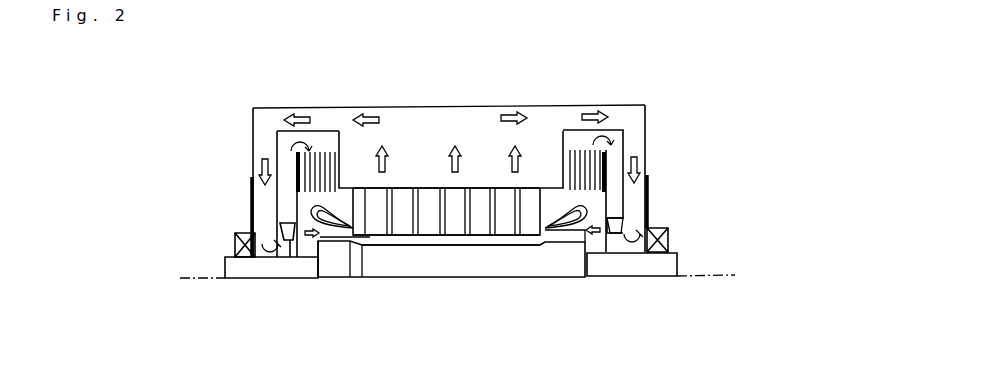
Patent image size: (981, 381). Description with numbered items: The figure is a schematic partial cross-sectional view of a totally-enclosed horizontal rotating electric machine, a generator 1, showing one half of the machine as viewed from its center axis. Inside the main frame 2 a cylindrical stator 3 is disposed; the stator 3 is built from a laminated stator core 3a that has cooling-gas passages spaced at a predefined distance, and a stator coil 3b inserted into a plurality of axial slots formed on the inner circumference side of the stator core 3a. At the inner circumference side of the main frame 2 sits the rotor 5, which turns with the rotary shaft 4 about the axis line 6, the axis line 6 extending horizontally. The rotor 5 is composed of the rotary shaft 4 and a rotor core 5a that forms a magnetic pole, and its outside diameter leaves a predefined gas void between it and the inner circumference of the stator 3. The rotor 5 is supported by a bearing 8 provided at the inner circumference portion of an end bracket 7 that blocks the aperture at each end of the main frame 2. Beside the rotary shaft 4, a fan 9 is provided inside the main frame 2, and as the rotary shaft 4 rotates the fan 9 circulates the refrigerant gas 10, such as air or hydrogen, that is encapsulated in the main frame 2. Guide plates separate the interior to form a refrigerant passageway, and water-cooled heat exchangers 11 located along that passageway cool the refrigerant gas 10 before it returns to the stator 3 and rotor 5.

The generator 1 is at (653, 90).
The main frame 2 is at (268, 108).
The stator 3 is at (400, 188).
The stator core 3a is at (405, 225).
The stator coil 3b is at (565, 227).
The rotary shaft 4 is at (258, 270).
The rotor 5 is at (340, 270).
The rotor core 5a is at (488, 260).
The axis line 6 is at (203, 282).
The end bracket 7 is at (252, 193).
The bearing 8 is at (235, 238).
The fan 9 is at (290, 242).
The refrigerant gas 10 is at (470, 128).
The water-cooled heat exchanger 11 is at (323, 152).